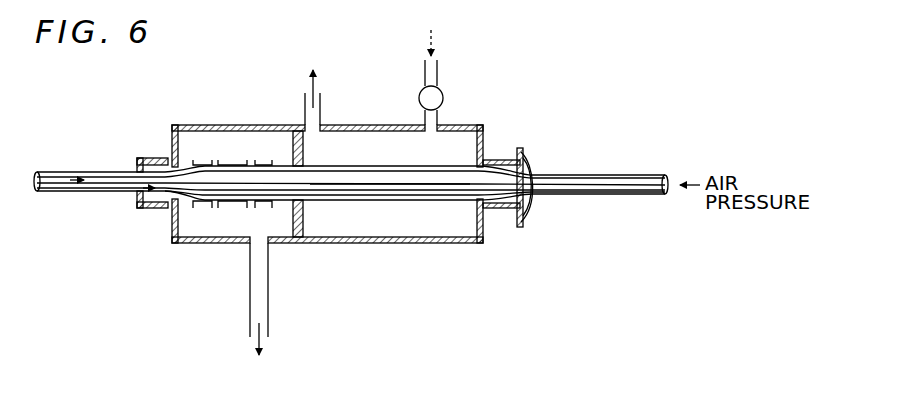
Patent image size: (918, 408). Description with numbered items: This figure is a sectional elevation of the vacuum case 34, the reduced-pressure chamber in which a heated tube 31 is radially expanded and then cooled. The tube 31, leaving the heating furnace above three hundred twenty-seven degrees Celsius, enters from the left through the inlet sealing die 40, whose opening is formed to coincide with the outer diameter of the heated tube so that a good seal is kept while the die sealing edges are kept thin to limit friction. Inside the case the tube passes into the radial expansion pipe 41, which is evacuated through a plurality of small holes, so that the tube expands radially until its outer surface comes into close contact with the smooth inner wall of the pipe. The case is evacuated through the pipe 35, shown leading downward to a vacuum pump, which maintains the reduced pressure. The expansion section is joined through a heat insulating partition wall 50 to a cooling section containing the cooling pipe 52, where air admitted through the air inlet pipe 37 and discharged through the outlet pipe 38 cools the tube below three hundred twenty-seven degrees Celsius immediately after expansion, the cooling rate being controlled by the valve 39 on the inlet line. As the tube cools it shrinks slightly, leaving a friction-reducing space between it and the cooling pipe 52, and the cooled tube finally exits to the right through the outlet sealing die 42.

The tube 31 is at (98, 172).
The vacuum case 34 is at (221, 125).
The pipe 35 is at (262, 303).
The air inlet pipe 37 is at (437, 115).
The outlet pipe 38 is at (313, 110).
The valve 39 is at (437, 80).
The sealing die 40 is at (152, 158).
The radial expansion pipe 41 is at (196, 160).
The sealing die 42 is at (503, 158).
The heat insulating partition wall 50 is at (303, 148).
The cooling pipe 52 is at (385, 148).